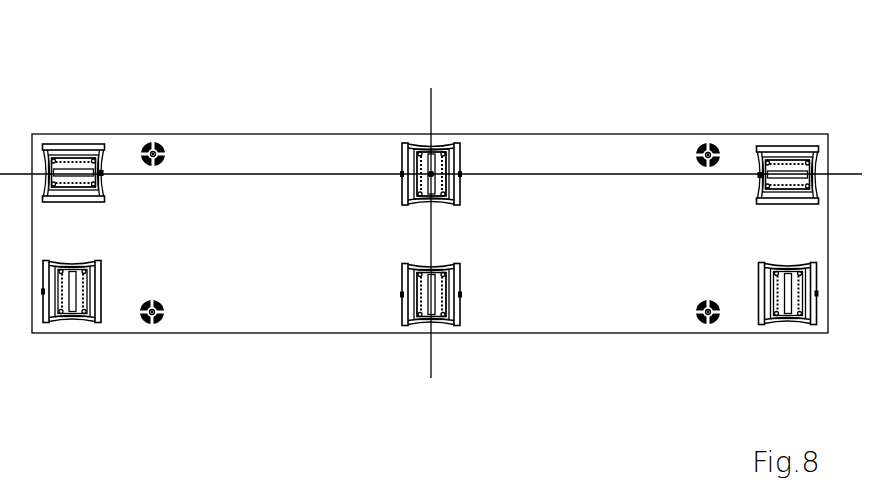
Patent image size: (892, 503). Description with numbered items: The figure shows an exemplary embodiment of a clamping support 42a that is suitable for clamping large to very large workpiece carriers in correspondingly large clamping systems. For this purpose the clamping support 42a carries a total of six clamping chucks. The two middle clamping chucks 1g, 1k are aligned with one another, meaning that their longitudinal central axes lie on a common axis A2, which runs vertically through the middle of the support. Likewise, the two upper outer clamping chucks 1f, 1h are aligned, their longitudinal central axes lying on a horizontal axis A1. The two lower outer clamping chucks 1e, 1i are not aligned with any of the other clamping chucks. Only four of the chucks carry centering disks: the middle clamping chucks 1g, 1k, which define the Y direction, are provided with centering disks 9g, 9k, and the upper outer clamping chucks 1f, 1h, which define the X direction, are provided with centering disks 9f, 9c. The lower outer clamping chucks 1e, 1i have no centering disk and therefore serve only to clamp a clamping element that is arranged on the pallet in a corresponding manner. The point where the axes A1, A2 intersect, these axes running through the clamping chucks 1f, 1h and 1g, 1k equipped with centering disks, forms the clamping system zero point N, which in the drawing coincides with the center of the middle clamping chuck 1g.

The clamping support 42a is at (667, 113).
The axis A1 is at (599, 174).
The axis A2 is at (431, 236).
The clamping system zero point N is at (430, 177).
The clamping chuck 1h is at (73, 131).
The centering disk 9c is at (88, 158).
The clamping chuck 1f is at (787, 132).
The centering disk 9f is at (803, 162).
The clamping chuck 1g is at (417, 132).
The centering disk 9g is at (440, 157).
The clamping chuck 1k is at (450, 335).
The centering disk 9k is at (418, 286).
The clamping chuck 1i is at (80, 335).
The clamping chuck 1e is at (782, 335).